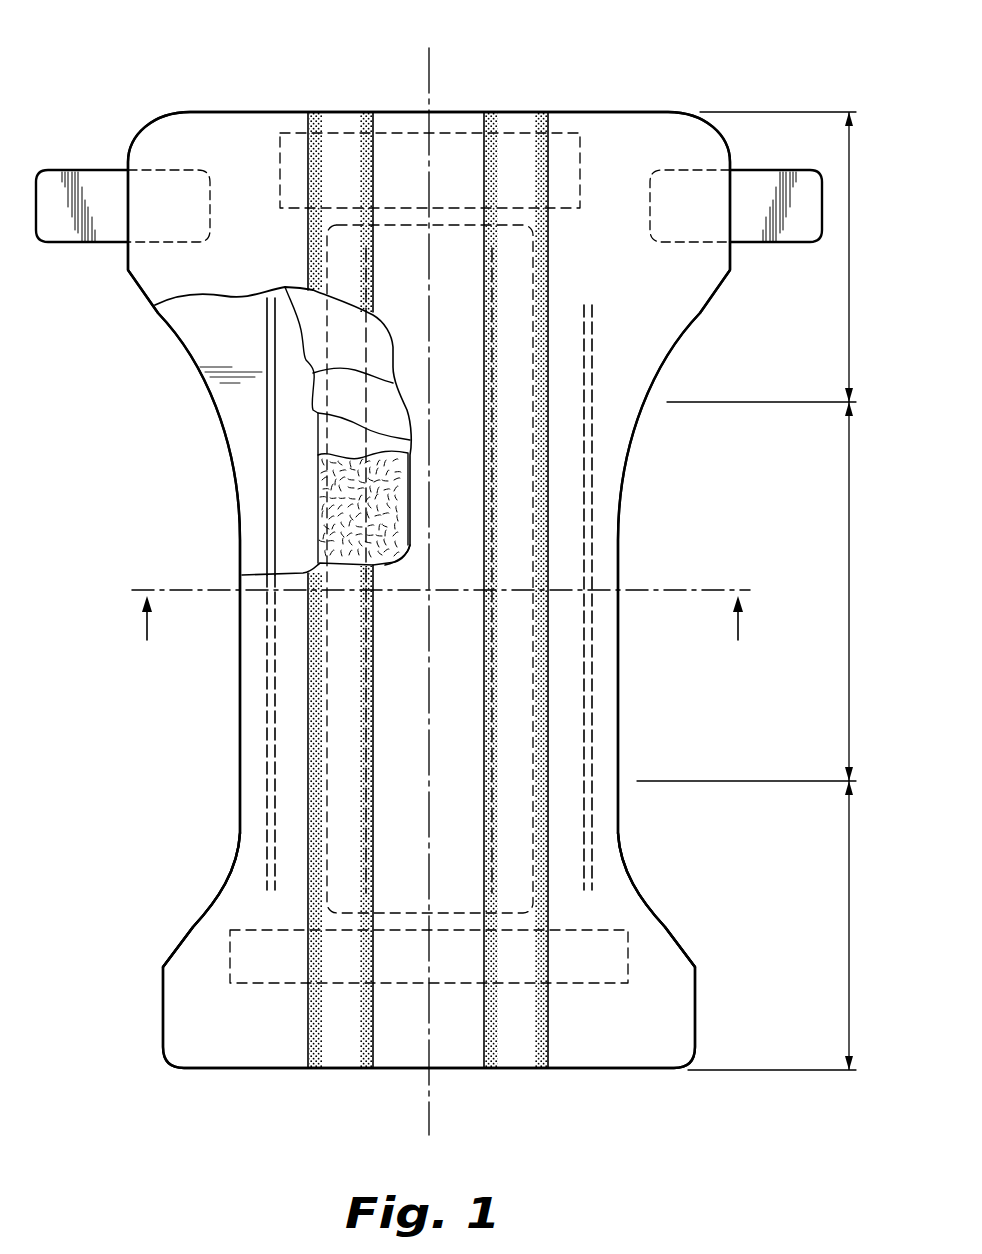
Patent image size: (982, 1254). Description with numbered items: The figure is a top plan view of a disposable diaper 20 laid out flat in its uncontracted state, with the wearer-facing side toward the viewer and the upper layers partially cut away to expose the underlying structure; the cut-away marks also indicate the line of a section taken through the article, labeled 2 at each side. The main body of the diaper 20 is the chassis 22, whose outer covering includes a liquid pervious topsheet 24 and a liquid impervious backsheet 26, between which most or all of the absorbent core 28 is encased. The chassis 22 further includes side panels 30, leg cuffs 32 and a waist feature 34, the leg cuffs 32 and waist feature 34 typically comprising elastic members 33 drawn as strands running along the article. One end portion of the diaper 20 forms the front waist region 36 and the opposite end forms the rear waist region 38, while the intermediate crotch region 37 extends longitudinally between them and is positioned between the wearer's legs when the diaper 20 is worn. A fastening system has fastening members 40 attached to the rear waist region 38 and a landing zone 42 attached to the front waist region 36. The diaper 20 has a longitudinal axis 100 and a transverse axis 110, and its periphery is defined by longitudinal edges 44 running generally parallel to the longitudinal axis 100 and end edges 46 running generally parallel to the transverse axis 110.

The diaper 20 is at (730, 75).
The chassis 22 is at (467, 720).
The topsheet 24 is at (385, 727).
The backsheet 26 is at (197, 343).
The absorbent core 28 is at (303, 475).
The side panels 30 is at (216, 160).
The leg cuffs 32 is at (296, 683).
The elastic members 33 is at (366, 267).
The waist feature 34 is at (465, 160).
The front waist region 36 is at (787, 925).
The crotch region 37 is at (762, 591).
The rear waist region 38 is at (777, 257).
The fastening members 40 is at (103, 180).
The landing zone 42 is at (290, 960).
The longitudinal edges 44 is at (240, 812).
The end edges 46 is at (330, 112).
The longitudinal axis 100 is at (429, 1108).
The transverse axis 110 is at (672, 590).
The section line 2- 2 is at (439, 603).